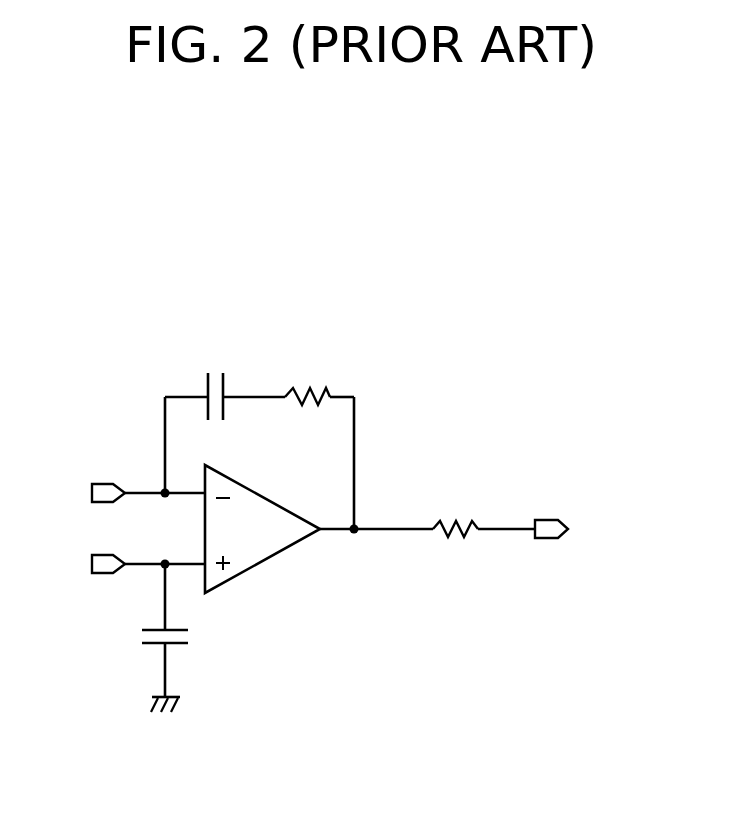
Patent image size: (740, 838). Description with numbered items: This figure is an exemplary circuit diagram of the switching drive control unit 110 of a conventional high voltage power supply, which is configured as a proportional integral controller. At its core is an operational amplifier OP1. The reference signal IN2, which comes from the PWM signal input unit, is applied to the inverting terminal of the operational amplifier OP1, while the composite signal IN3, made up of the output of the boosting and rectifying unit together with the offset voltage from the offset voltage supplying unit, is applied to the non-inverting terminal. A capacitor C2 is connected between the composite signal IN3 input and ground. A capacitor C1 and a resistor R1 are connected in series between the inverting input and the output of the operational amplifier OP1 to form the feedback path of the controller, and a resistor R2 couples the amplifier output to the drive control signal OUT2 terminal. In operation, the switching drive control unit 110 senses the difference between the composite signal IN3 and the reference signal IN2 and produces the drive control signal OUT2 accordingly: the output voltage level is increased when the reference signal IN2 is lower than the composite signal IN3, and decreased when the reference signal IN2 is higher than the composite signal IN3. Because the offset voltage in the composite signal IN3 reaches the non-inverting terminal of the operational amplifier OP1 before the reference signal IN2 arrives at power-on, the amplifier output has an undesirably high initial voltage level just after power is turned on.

The switching drive control unit 110 is at (548, 392).
The capacitor C1 is at (218, 379).
The resistor R1 is at (307, 379).
The operational amplifier OP1 is at (265, 496).
The resistor R2 is at (455, 512).
The capacitor C2 is at (189, 637).
The reference signal IN2 is at (121, 495).
The composite signal IN3 is at (121, 567).
The drive control signal OUT2 is at (596, 530).